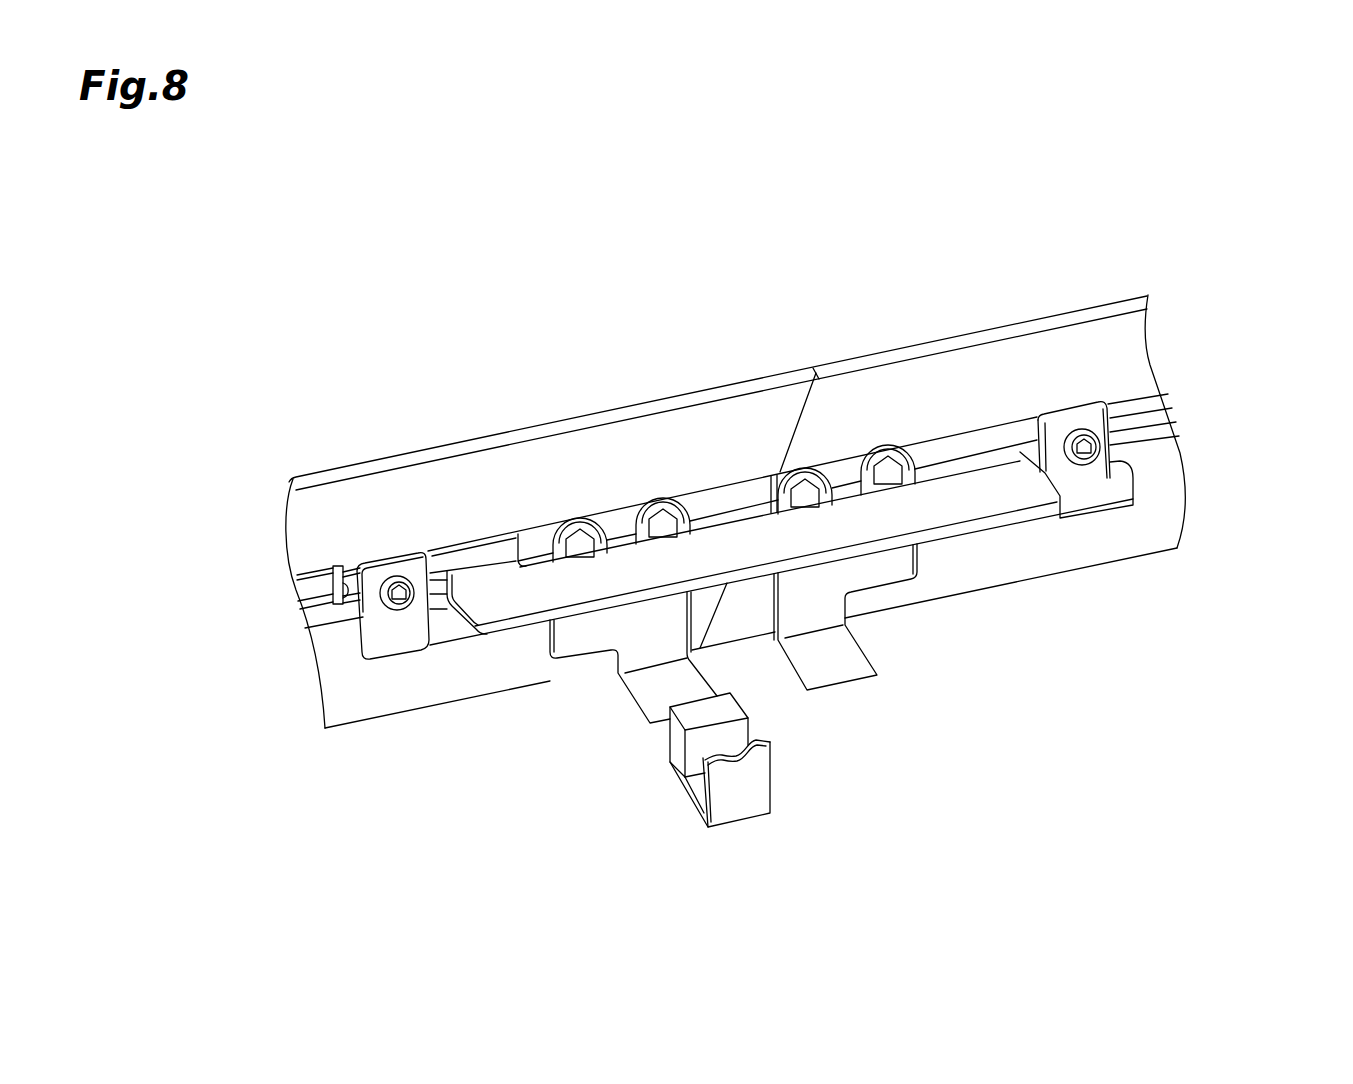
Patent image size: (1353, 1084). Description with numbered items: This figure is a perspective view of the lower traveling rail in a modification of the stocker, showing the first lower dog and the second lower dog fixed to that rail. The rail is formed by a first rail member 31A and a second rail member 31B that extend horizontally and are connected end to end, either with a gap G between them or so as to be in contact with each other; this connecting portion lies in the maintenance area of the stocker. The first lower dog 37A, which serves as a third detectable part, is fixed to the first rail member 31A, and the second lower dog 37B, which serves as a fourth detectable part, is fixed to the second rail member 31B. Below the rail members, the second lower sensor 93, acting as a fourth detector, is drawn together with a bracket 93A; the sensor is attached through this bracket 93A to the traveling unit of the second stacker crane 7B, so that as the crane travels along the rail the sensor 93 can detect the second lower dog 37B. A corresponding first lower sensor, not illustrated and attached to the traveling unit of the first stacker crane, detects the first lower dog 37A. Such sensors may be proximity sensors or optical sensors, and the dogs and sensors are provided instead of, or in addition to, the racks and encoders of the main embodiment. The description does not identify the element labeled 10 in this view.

The slide rail device 10 is at (829, 346).
The first rail member 31A is at (1140, 358).
The second rail member 31B is at (306, 528).
The gap G is at (792, 431).
The first lower dog 37A is at (843, 667).
The second lower dog 37B is at (648, 692).
The second stacker crane 7B is at (746, 829).
The second lower sensor 93 is at (676, 742).
The bracket 93A is at (746, 787).